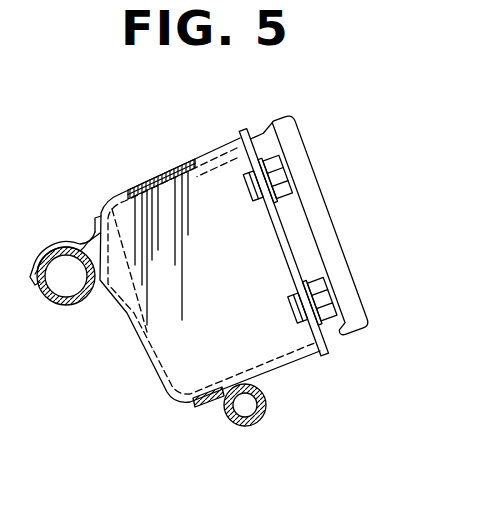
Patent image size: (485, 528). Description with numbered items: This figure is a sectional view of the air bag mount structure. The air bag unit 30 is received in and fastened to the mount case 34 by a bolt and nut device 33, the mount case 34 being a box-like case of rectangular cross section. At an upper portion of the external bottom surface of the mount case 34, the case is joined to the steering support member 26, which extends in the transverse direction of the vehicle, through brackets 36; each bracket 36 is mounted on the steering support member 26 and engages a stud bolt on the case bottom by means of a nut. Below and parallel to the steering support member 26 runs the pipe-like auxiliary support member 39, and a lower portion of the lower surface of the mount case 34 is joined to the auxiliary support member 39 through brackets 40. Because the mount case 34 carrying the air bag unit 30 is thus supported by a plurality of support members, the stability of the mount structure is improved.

The steering support member 26 is at (80, 311).
The air bag unit 30 is at (306, 193).
The bolt and nut device 33 is at (256, 203).
The mount case 34 is at (163, 173).
The bracket 36 is at (53, 243).
The auxiliary support member 39 is at (267, 387).
The bracket 40 is at (213, 408).